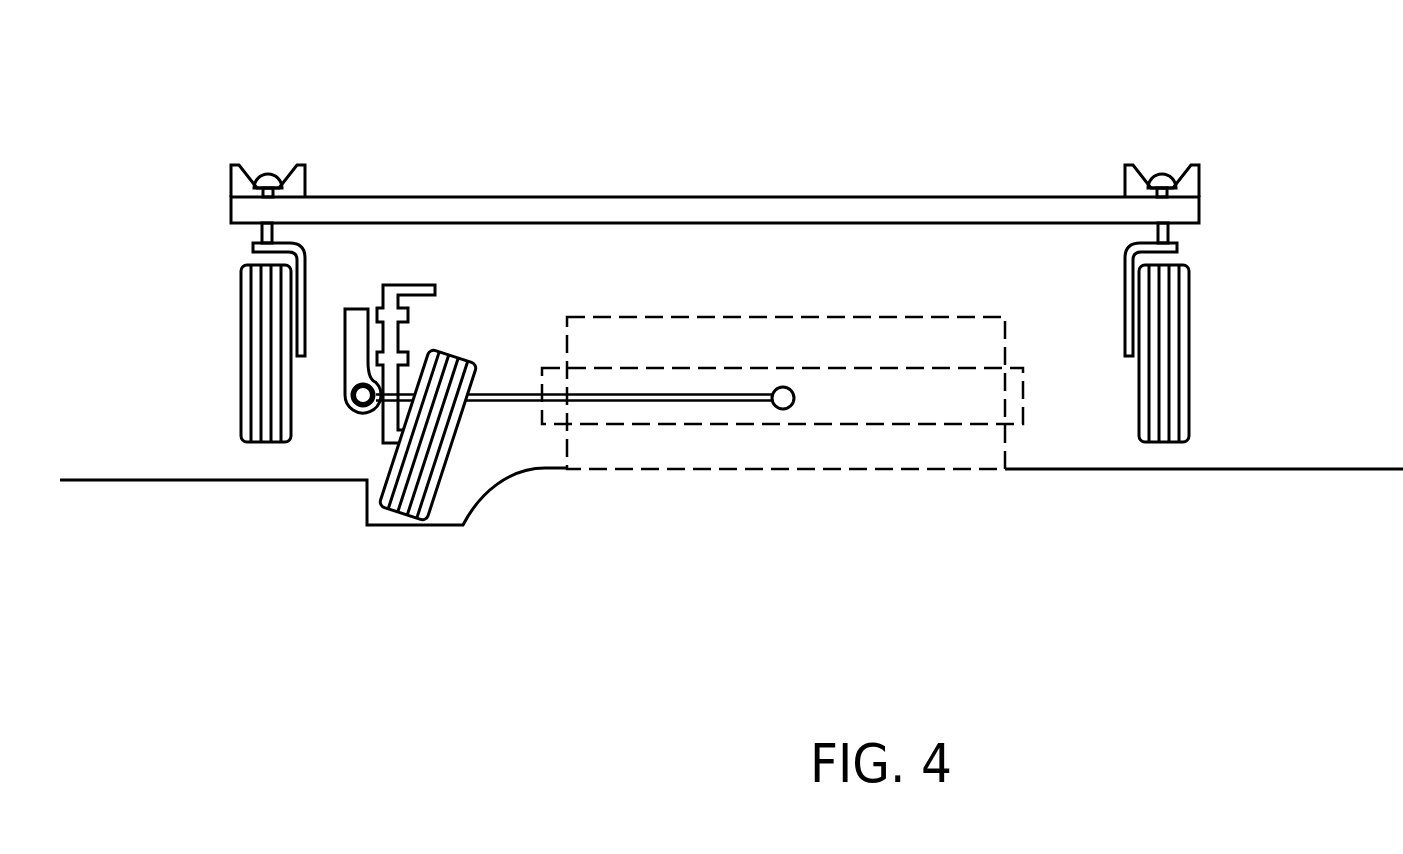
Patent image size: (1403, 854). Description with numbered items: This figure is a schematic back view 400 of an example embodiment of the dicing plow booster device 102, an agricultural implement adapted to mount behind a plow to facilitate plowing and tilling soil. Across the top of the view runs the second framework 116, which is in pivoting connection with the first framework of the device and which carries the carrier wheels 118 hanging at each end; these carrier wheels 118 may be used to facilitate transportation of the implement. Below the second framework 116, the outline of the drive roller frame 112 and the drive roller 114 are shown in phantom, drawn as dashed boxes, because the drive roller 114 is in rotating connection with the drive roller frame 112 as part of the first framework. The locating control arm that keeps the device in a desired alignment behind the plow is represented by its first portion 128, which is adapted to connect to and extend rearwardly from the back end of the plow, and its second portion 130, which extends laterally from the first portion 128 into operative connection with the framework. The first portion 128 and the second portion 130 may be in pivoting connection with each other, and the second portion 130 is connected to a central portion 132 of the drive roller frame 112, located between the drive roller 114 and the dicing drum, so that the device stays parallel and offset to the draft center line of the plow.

The schematic back view 400 is at (820, 62).
The dicing plow booster device 102 is at (458, 146).
The second framework 116 is at (835, 197).
The carrier wheels 118 is at (240, 347).
The first portion 128 is at (347, 397).
The second portion 130 is at (697, 403).
The central portion 132 is at (784, 434).
The drive roller frame 112 is at (910, 388).
The drive roller 114 is at (840, 462).